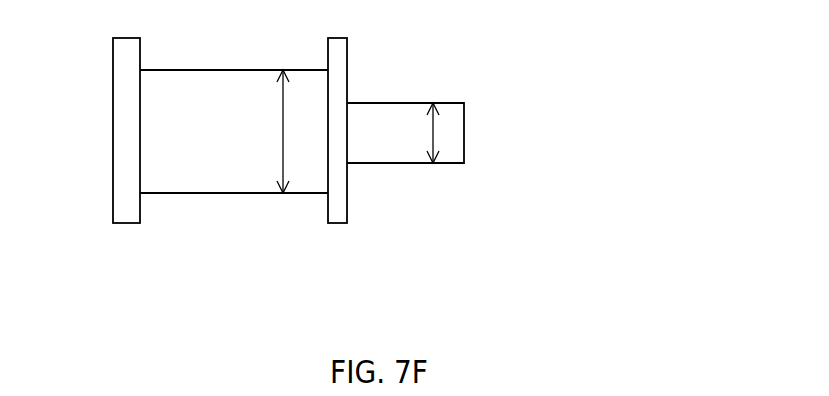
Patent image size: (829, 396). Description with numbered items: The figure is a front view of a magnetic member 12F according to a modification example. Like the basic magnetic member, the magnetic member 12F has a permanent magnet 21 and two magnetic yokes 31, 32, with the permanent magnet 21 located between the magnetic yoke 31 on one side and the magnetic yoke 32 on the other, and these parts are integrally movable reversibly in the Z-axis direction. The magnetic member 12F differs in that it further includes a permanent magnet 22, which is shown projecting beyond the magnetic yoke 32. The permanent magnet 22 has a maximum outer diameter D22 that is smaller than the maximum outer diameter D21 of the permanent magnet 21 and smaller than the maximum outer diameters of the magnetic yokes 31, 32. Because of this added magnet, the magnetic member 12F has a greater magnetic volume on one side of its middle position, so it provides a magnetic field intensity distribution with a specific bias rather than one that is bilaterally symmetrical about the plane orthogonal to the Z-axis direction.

The magnetic member 12F is at (565, 127).
The permanent magnet 21 is at (243, 178).
The permanent magnet 22 is at (408, 150).
The magnetic yoke 31 is at (132, 212).
The magnetic yoke 32 is at (340, 212).
The maximum outer diameter D21 is at (258, 131).
The maximum outer diameter D22 is at (411, 133).